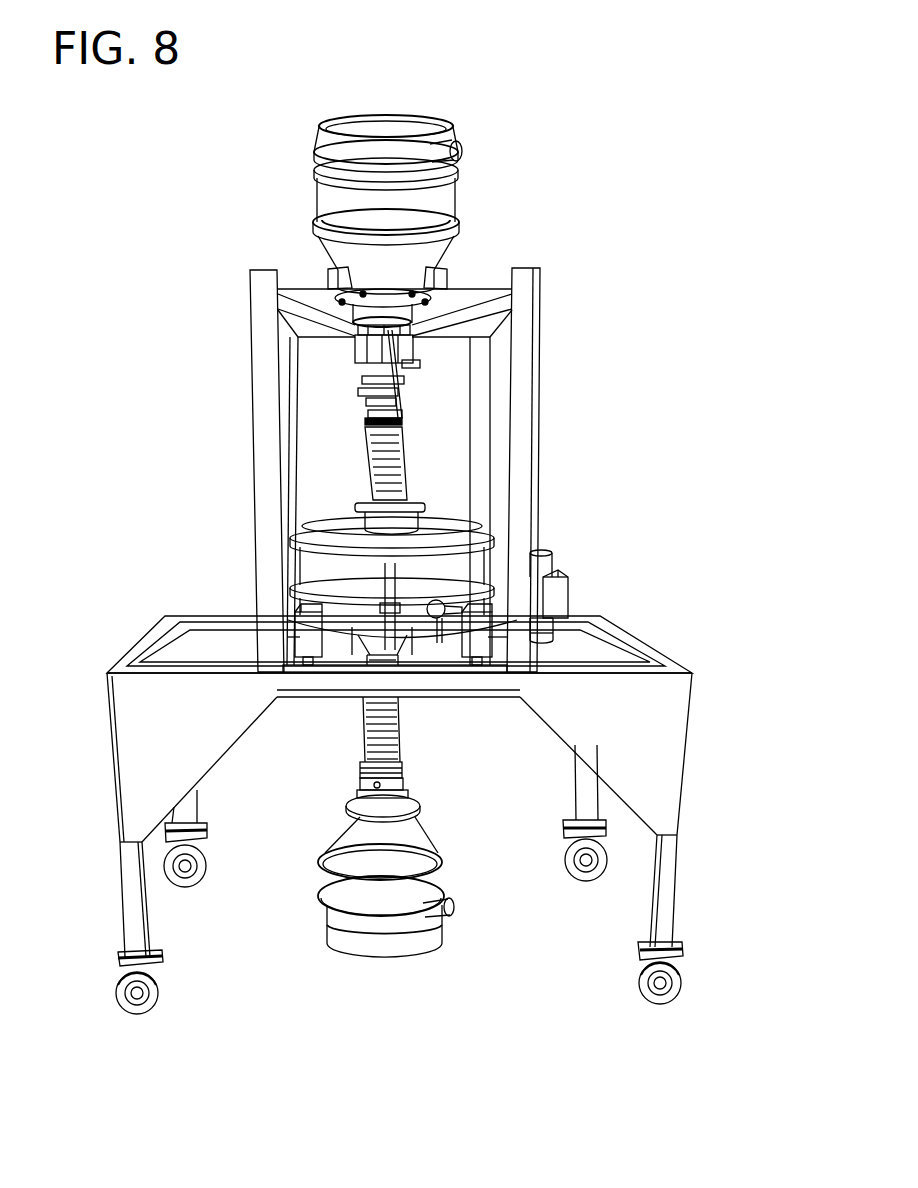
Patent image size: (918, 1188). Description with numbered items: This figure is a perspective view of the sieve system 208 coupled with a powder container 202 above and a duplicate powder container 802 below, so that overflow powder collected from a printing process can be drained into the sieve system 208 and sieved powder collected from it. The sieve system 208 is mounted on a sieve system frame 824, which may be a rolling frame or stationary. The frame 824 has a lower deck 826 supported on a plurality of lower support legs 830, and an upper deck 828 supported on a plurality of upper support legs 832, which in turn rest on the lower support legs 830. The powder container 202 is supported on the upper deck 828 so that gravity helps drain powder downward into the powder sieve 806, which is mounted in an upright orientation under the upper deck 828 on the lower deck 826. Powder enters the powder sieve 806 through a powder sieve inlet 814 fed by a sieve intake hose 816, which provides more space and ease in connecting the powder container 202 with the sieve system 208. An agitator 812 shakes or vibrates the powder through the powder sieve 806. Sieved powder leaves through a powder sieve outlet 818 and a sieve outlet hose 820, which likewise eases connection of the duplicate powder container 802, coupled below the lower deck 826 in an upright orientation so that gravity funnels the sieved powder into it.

The sieve system 208 is at (162, 283).
The powder container 202 is at (442, 213).
The upper deck 828 is at (322, 292).
The sieve intake hose 816 is at (372, 463).
The powder sieve inlet 814 is at (365, 510).
The powder sieve 806 is at (318, 563).
The upper support legs 832 is at (272, 585).
The lower deck 826 is at (290, 683).
The sieve system frame 824 is at (132, 656).
The agitator 812 is at (538, 600).
The powder sieve outlet 818 is at (373, 642).
The sieve outlet hose 820 is at (367, 737).
The duplicate powder container 802 is at (420, 937).
The lower support legs 830 is at (137, 910).